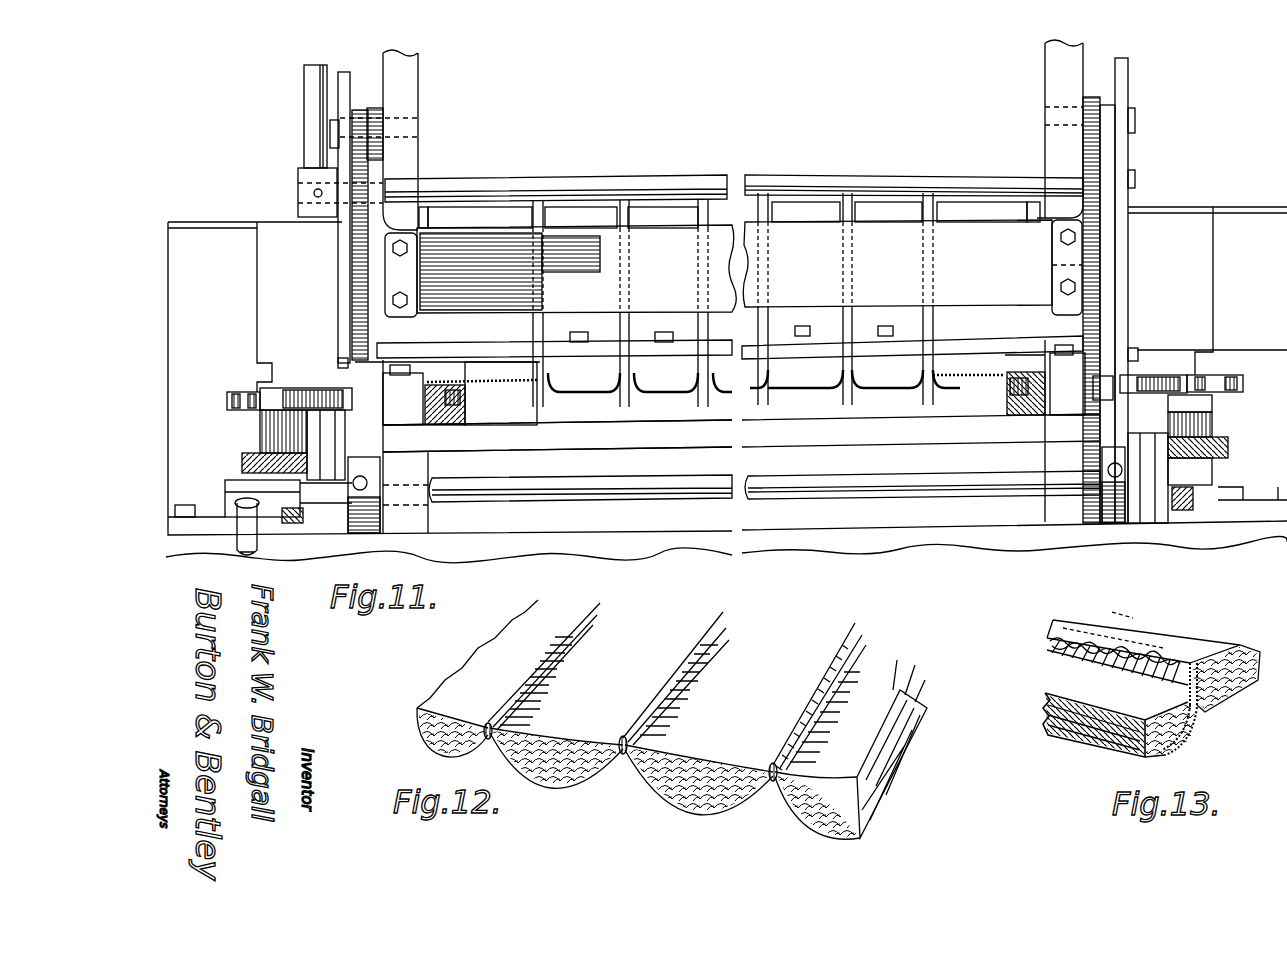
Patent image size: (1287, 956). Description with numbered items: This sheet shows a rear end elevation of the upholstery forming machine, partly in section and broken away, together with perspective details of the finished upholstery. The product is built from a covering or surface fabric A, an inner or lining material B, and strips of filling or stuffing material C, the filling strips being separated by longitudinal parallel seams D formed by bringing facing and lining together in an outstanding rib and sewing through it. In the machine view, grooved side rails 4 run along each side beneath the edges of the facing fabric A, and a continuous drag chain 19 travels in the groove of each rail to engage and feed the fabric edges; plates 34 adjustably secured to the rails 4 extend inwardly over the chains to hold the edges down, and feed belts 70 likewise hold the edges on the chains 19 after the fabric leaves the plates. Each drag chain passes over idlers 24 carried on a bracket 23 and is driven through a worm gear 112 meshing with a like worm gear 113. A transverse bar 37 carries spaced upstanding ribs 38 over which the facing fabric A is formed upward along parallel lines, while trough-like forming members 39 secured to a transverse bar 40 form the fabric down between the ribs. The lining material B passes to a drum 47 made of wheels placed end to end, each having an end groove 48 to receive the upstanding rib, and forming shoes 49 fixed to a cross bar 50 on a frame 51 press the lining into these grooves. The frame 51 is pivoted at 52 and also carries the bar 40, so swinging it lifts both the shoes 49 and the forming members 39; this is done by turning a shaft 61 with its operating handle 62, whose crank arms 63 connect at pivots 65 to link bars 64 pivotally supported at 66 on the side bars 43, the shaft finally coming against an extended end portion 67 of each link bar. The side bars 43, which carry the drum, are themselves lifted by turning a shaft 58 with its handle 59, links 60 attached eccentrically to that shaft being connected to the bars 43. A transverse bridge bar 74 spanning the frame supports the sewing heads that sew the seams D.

In FIG. 11, the grooved side rails 4 is at (465, 420).
In FIG. 11, the drag chain 19 is at (227, 401).
In FIG. 11, the bracket 23 is at (260, 435).
In FIG. 11, the idlers 24 is at (285, 388).
In FIG. 11, the plates 34 is at (1000, 372).
In FIG. 11, the bar 37 is at (690, 425).
In FIG. 11, the upstanding ribs 38 is at (640, 393).
In FIG. 11, the trough-like forming members 39 is at (563, 393).
In FIG. 11, the transverse bar 40 is at (730, 336).
In FIG. 11, the supporting frame members or bars 43 is at (734, 385).
In FIG. 11, the drum 47 is at (666, 212).
In FIG. 11, the end groove 48 is at (628, 212).
In FIG. 11, the forming shoes 49 is at (545, 212).
In FIG. 11, the cross bar 50 is at (734, 281).
In FIG. 11, the frame 51 is at (400, 162).
In FIG. 11, the pivot 52 is at (418, 112).
In FIG. 11, the shaft 58 is at (795, 501).
In FIG. 11, the operating handle 59 is at (237, 548).
In FIG. 11, the links 60 is at (385, 473).
In FIG. 11, the shaft 61 is at (497, 179).
In FIG. 11, the operating handle 62 is at (304, 108).
In FIG. 11, the crank arms 63 is at (330, 160).
In FIG. 11, the link bars 64 is at (352, 278).
In FIG. 11, the pivot 65 is at (330, 131).
In FIG. 11, the pivotal support 66 is at (340, 362).
In FIG. 11, the extended end portion 67 is at (1115, 70).
In FIG. 11, the feed belts 70 is at (428, 210).
In FIG. 11, the transverse bridge bar 74 is at (1175, 207).
In FIG. 11, the worm gear 112 is at (292, 523).
In FIG. 11, the worm gear 113 is at (242, 461).
In FIG. 12, the covering or surface fabric A is at (692, 810).
In FIG. 13, the covering or surface fabric A is at (1190, 745).
In FIG. 12, the inner or lining material B is at (678, 678).
In FIG. 13, the inner or lining material B is at (1119, 713).
In FIG. 12, the strips of filling or stuffing material C is at (875, 792).
In FIG. 13, the strips of filling or stuffing material C is at (1225, 700).
In FIG. 12, the longitudinal parallel seams D is at (822, 683).
In FIG. 13, the longitudinal parallel seams D is at (1135, 642).